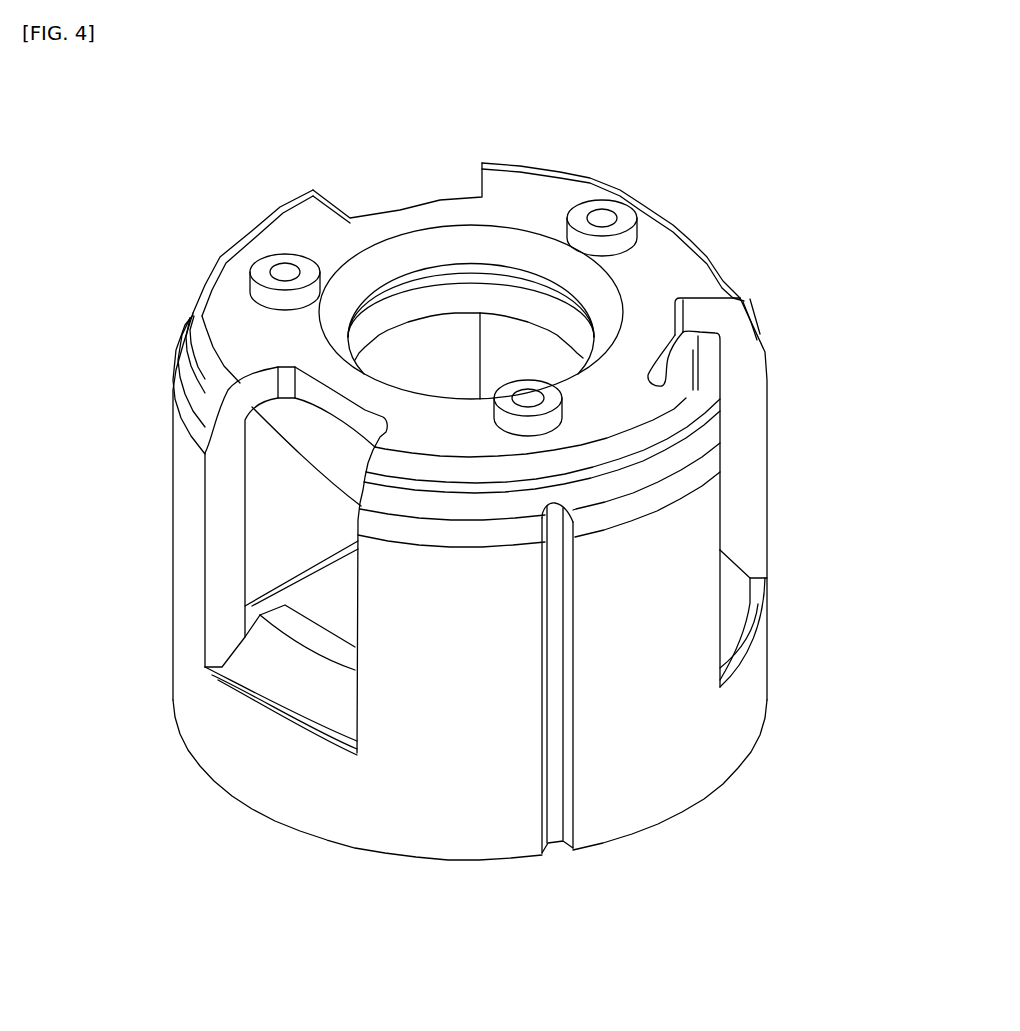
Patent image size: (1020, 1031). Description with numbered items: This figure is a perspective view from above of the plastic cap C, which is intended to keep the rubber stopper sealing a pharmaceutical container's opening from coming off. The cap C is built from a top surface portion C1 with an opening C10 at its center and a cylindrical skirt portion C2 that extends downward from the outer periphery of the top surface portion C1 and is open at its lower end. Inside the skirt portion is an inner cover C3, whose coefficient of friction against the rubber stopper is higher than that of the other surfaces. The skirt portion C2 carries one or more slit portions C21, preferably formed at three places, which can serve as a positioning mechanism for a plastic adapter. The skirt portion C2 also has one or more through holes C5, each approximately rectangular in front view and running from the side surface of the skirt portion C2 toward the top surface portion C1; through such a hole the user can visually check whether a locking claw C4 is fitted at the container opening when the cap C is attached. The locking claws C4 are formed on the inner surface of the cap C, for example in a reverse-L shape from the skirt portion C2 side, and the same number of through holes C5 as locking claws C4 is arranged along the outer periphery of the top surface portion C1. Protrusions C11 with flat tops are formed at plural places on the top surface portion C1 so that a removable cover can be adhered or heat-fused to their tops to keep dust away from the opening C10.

The cap C is at (797, 187).
The top surface portion C1 is at (653, 255).
The skirt portion C2 is at (677, 592).
The inner cover C3 is at (683, 377).
The locking claw C4 is at (277, 673).
The through hole C5 is at (305, 468).
The opening C10 is at (453, 332).
The protrusion C11 is at (273, 253).
The slit portion C21 is at (566, 808).